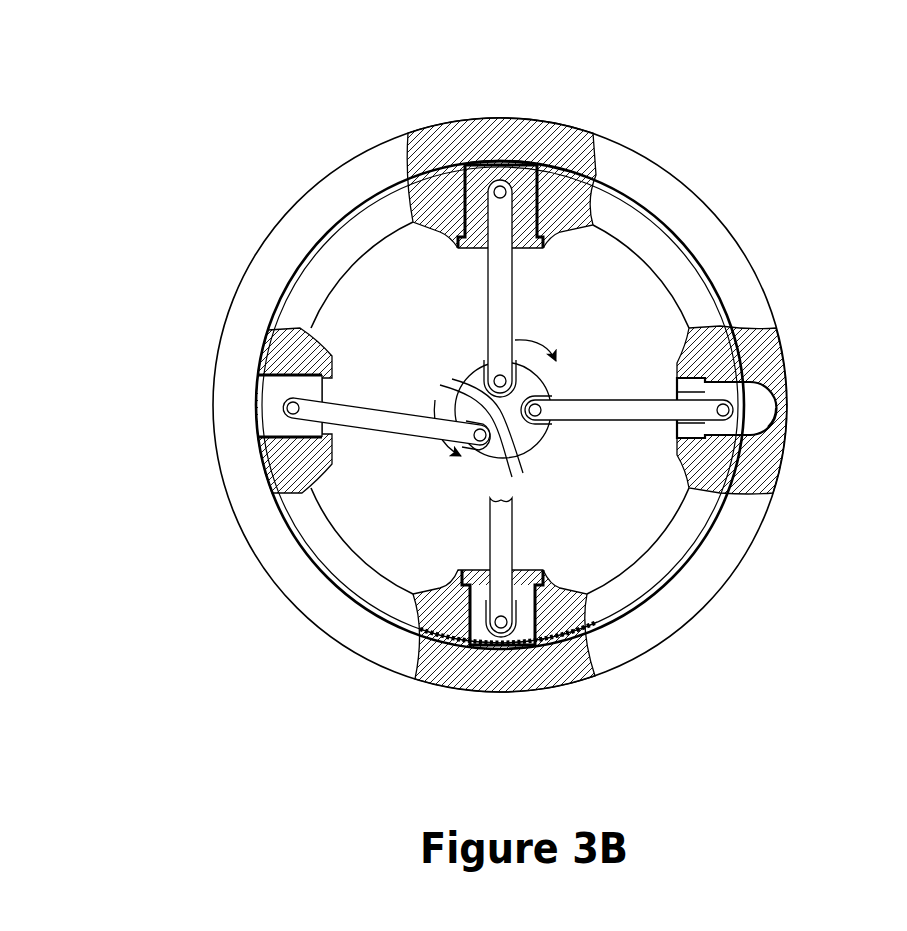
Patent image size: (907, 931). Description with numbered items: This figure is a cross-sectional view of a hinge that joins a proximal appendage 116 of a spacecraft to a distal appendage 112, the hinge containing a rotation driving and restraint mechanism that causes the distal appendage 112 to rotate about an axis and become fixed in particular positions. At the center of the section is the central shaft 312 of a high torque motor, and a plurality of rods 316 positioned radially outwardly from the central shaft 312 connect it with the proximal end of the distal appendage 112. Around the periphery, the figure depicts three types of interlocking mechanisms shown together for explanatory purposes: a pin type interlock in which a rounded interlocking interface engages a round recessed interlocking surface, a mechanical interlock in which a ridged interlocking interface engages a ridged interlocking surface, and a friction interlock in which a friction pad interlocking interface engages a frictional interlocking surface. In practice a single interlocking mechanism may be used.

The distal appendage 112 is at (692, 286).
The proximal appendage 116 is at (247, 437).
The central shaft 312 is at (523, 435).
The rods 316 is at (487, 283).